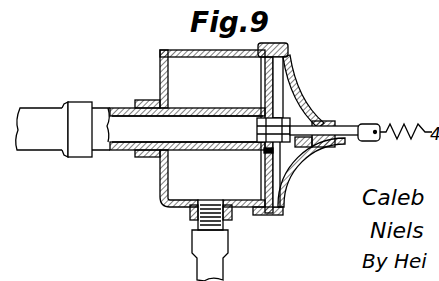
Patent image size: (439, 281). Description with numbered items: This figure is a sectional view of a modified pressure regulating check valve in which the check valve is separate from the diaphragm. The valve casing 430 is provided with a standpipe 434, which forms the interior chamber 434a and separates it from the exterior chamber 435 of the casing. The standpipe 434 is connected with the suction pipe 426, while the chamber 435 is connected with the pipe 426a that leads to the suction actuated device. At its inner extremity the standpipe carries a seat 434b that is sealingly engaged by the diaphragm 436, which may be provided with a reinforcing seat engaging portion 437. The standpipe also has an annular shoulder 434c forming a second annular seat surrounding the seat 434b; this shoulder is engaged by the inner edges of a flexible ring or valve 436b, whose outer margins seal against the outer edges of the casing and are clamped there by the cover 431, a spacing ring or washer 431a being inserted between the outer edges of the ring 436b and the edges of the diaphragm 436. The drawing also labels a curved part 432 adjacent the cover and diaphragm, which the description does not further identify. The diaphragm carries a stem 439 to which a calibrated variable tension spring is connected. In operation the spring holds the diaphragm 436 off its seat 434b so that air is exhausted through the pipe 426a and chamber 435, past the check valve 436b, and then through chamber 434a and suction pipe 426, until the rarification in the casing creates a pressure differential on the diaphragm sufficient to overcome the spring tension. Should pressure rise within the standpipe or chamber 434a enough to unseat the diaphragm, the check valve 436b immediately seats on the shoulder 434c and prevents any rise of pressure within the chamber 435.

The suction pipe 426 is at (63, 103).
The pipe 426a is at (203, 262).
The valve casing 430 is at (160, 188).
The cover 431 is at (288, 64).
The spacing ring or washer 431a is at (271, 215).
The curved flange 432 is at (302, 110).
The standpipe 434 is at (208, 105).
The interior chamber 434a is at (187, 129).
The seat 434b is at (294, 168).
The annular shoulder 434c is at (266, 154).
The exterior chamber 435 is at (224, 171).
The diaphragm 436 is at (292, 79).
The flexible ring or valve 436b is at (265, 74).
The reinforcing seat engaging portion 437 is at (279, 106).
The stem 439 is at (346, 132).